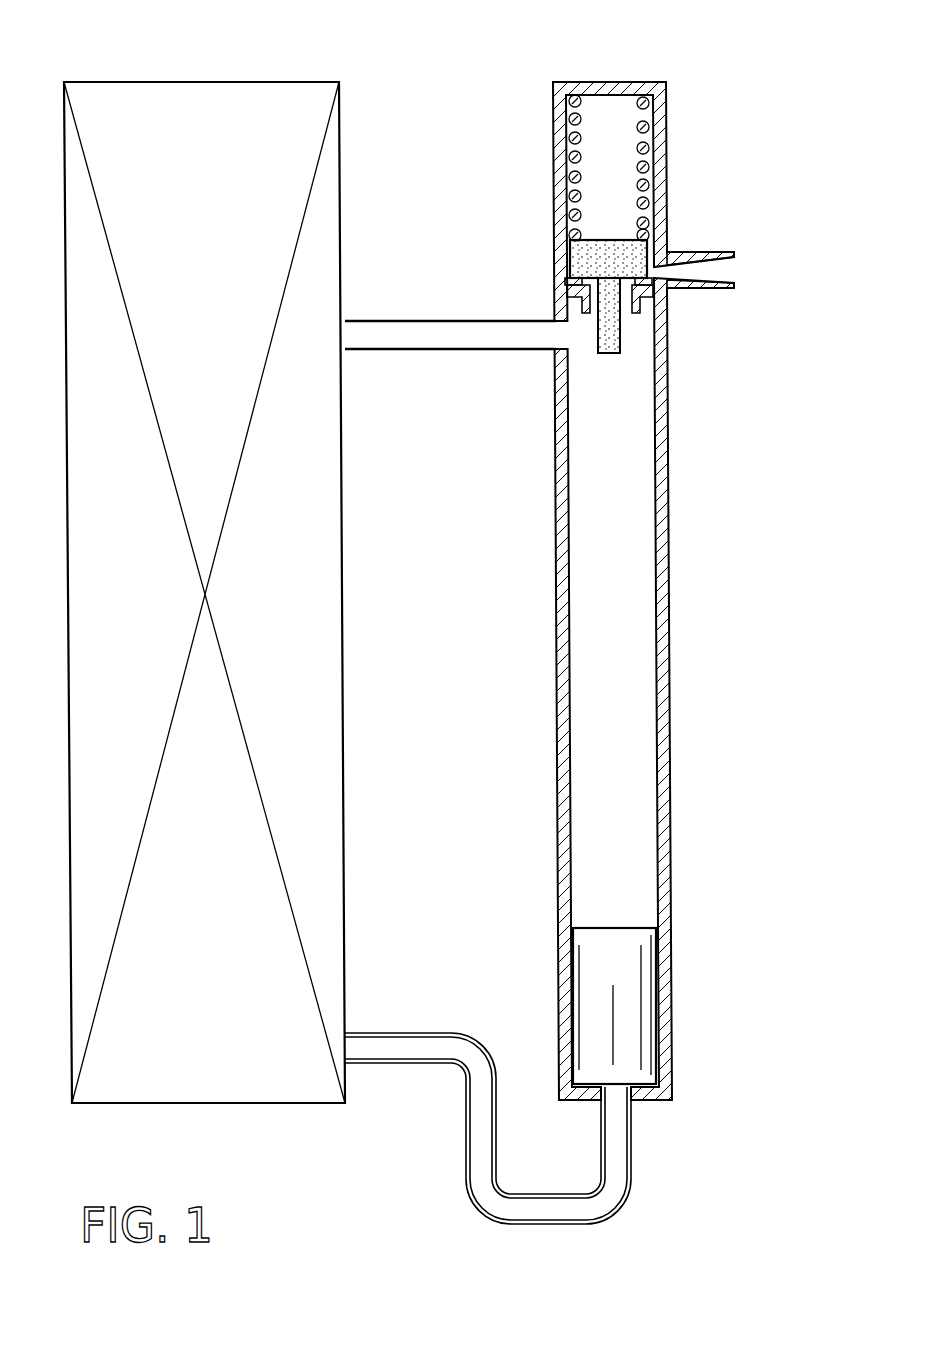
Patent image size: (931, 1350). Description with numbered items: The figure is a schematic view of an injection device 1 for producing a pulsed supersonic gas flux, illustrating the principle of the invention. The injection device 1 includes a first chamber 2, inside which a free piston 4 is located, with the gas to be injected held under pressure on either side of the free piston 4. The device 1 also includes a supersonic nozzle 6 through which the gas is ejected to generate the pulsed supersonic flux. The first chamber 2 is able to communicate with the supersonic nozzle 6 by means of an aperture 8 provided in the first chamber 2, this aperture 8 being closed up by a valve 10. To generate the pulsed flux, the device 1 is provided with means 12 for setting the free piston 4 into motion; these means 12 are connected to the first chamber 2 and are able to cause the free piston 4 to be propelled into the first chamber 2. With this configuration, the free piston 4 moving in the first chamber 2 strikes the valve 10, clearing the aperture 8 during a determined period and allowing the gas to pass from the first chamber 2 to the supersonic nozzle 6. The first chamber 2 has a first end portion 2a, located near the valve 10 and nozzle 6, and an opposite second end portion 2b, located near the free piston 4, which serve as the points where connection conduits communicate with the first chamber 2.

The injection device 1 is at (724, 554).
The first chamber 2 is at (660, 767).
The first end portion of the first chamber 2a is at (760, 295).
The second end portion of the first chamber 2b is at (702, 927).
The free piston 4 is at (593, 970).
The supersonic nozzle 6 is at (694, 260).
The aperture 8 is at (622, 302).
The valve 10 is at (606, 250).
The means for setting the free piston into motion 12 is at (228, 80).